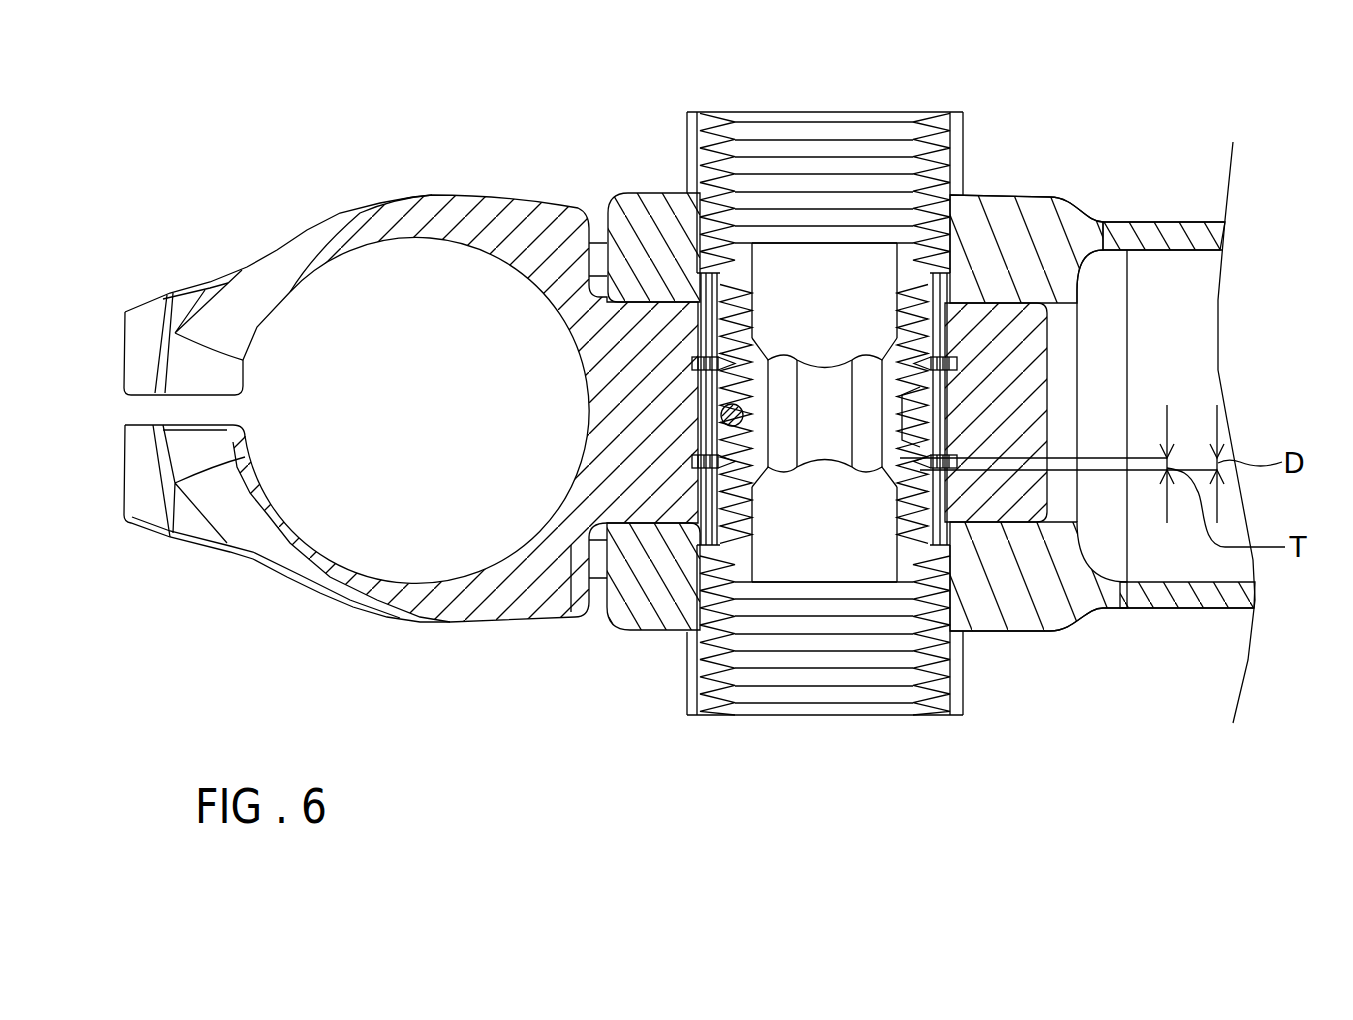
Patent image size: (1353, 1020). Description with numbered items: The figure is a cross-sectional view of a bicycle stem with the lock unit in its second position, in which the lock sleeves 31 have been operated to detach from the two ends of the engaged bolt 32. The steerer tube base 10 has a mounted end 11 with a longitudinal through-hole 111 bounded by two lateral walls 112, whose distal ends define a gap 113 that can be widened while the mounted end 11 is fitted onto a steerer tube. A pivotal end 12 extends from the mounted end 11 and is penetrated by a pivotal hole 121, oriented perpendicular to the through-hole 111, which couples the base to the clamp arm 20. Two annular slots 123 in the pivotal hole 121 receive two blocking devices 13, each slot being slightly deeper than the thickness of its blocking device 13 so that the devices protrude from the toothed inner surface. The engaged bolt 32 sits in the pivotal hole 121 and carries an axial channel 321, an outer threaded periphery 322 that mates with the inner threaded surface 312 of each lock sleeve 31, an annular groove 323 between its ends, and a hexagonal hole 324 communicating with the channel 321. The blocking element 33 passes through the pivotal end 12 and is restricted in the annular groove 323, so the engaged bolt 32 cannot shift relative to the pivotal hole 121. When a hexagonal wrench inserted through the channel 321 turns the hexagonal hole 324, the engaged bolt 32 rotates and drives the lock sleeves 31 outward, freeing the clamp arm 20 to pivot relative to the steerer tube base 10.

The steerer tube base 10 is at (287, 135).
The mounted end 11 is at (494, 222).
The through-hole 111 is at (373, 290).
The lateral walls 112 is at (233, 307).
The gap 113 is at (193, 413).
The pivotal end 12 is at (1097, 365).
The pivotal hole 121 is at (950, 303).
The slots 123 is at (1015, 347).
The blocking devices 13 is at (692, 360).
The clamp arm 20 is at (1153, 235).
The lock sleeves 31 is at (943, 138).
The engaged bolt 32 is at (660, 617).
The channel 321 is at (842, 527).
The outer threaded periphery 322 is at (897, 582).
The inner threaded surface 312 is at (856, 533).
The annular groove 323 is at (700, 461).
The hexagonal hole 324 is at (815, 427).
The blocking element 33 is at (700, 427).